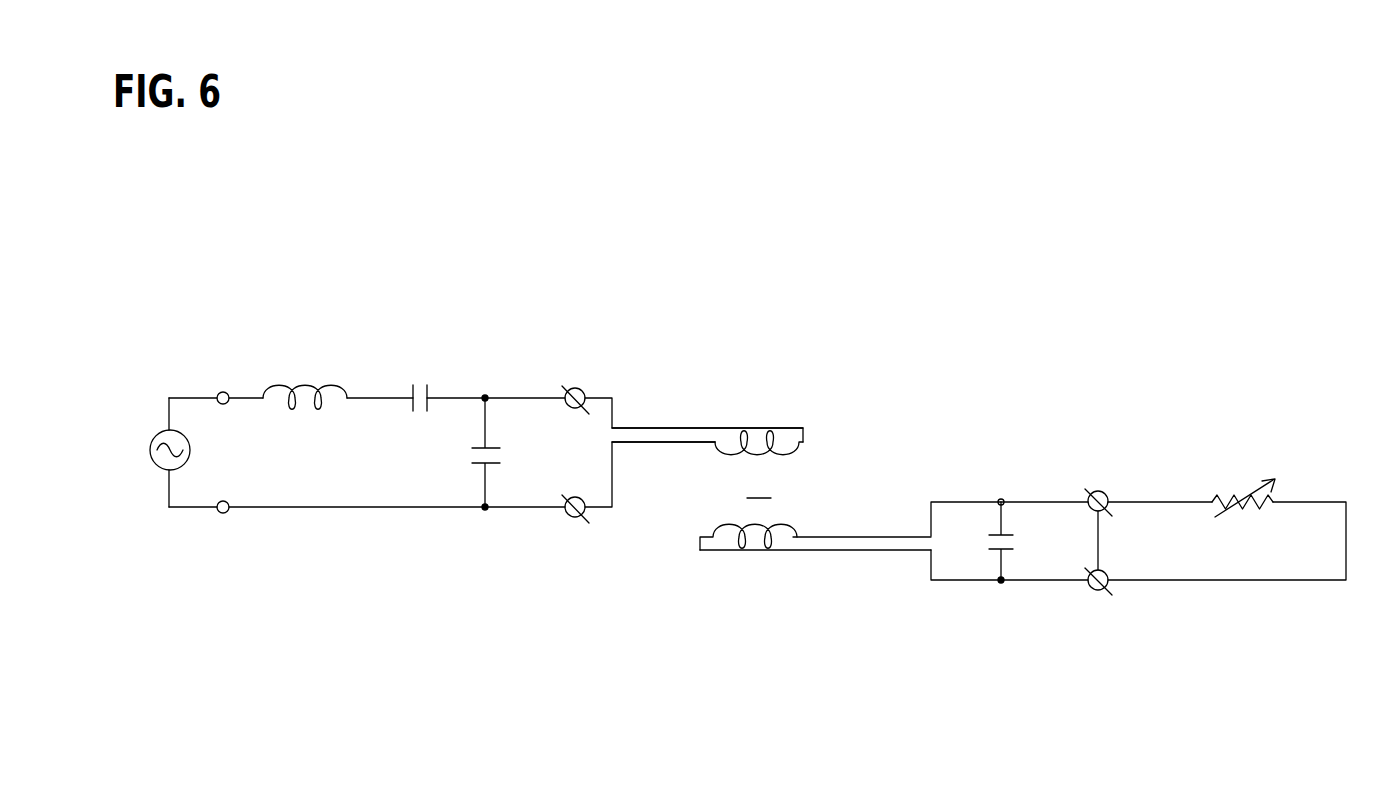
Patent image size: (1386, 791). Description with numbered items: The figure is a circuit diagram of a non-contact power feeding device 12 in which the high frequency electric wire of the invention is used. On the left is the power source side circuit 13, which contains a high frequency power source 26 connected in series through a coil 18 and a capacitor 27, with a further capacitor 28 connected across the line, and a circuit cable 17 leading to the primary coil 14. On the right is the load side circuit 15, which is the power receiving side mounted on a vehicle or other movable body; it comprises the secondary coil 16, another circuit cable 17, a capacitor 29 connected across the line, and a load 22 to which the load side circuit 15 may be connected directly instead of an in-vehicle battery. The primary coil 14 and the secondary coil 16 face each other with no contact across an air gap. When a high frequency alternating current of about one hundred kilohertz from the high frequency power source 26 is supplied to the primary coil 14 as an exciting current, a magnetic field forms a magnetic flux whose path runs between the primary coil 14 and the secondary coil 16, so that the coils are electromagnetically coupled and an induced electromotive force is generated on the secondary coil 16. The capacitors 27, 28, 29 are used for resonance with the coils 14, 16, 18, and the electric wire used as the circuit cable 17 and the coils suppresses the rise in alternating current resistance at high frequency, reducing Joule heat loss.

The non-contact power feeding device 12 is at (1210, 311).
The power source side circuit 13 is at (171, 537).
The primary coil 14 is at (803, 445).
The load side circuit 15 is at (1250, 598).
The secondary coil 16 is at (716, 525).
The circuit cable 17 is at (637, 426).
The coil 18 is at (295, 391).
The load 22 is at (1232, 497).
The high frequency power source 26 is at (150, 446).
The capacitor 27 is at (429, 386).
The capacitor 28 is at (490, 447).
The capacitor 29 is at (1004, 551).